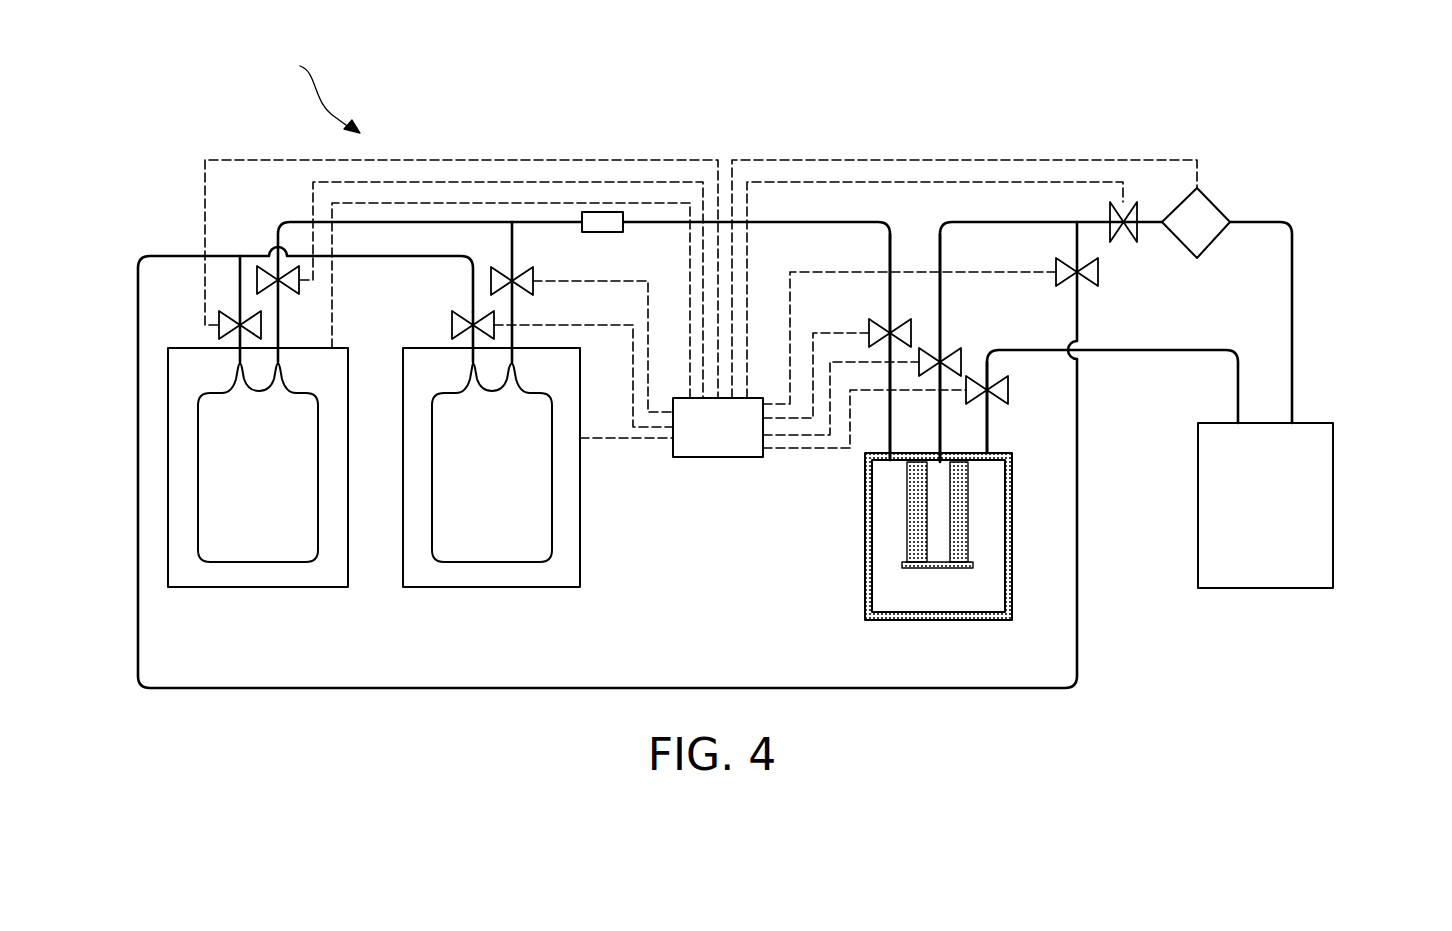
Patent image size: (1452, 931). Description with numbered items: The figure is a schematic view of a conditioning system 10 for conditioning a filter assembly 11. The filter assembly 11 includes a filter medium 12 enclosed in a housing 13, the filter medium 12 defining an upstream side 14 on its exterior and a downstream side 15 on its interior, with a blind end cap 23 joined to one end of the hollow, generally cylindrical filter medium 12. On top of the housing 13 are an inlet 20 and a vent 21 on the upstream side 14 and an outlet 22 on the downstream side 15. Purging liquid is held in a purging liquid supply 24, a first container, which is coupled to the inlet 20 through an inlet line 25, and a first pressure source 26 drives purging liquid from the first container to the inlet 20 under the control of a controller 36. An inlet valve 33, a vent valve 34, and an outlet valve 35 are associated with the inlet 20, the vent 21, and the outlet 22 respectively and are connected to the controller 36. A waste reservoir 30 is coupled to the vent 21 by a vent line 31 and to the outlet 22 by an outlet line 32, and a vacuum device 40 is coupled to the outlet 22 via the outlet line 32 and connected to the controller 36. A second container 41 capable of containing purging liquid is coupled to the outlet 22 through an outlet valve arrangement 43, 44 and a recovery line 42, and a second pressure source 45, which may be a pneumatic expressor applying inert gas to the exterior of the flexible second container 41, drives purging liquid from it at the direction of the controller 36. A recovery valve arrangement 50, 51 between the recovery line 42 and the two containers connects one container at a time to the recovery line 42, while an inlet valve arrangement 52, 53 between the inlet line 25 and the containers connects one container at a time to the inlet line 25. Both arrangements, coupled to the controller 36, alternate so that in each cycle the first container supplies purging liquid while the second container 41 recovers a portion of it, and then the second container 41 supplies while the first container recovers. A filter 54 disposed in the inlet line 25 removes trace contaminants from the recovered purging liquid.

The conditioning system 10 is at (314, 88).
The filter assembly 11 is at (949, 560).
The filter medium 12 is at (982, 564).
The housing 13 is at (865, 568).
The upstream side 14 is at (890, 502).
The downstream side 15 is at (940, 487).
The inlet 20 is at (888, 445).
The vent 21 is at (987, 448).
The outlet 22 is at (936, 446).
The blind end cap 23 is at (940, 568).
The purging liquid supply 24 is at (485, 547).
The inlet line 25 is at (662, 222).
The first pressure source 26 is at (566, 533).
The waste reservoir 30 is at (1333, 483).
The vent line 31 is at (1142, 352).
The outlet line 32 is at (1048, 222).
The inlet valve 33 is at (875, 320).
The vent valve 34 is at (1007, 383).
The outlet valve 35 is at (948, 350).
The controller 36 is at (713, 457).
The vacuum device 40 is at (1215, 205).
The second container 41 is at (252, 547).
The recovery line 42 is at (641, 688).
The outlet valve arrangement 43 is at (1100, 273).
The outlet valve arrangement 44 is at (1123, 243).
The second pressure source 45 is at (337, 587).
The recovery valve arrangement 50 is at (218, 320).
The recovery valve arrangement 51 is at (452, 325).
The inlet valve arrangement 52 is at (258, 268).
The inlet valve arrangement 53 is at (531, 275).
The filter 54 is at (602, 210).